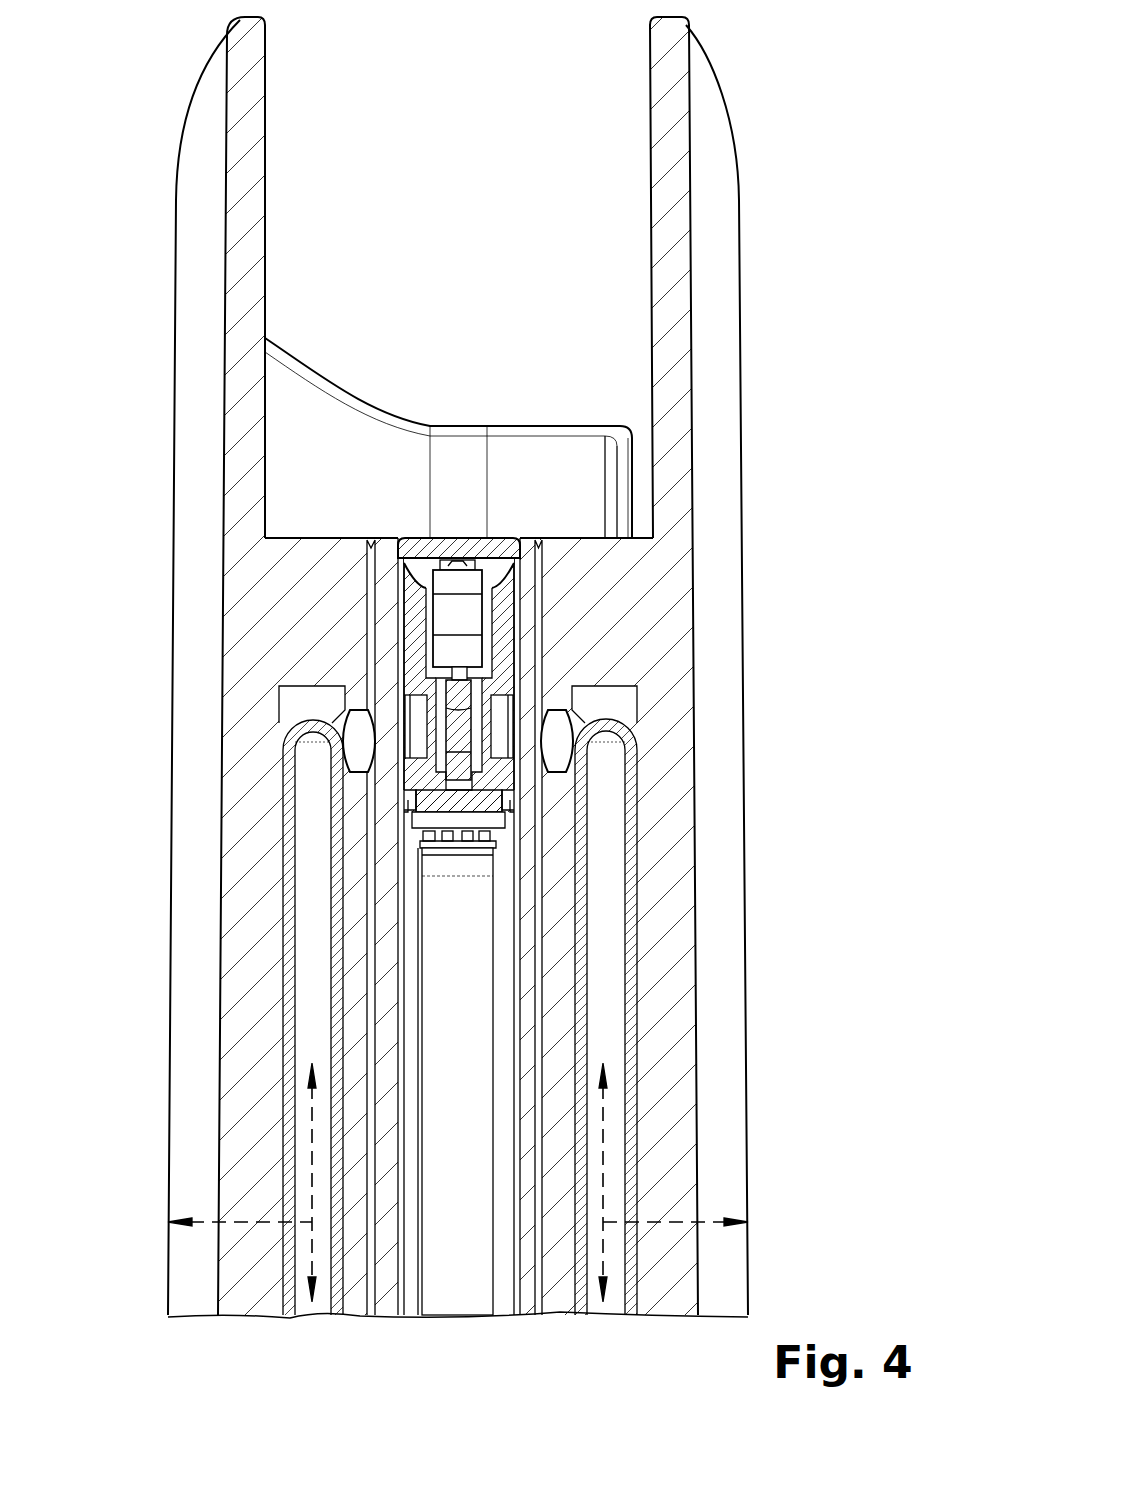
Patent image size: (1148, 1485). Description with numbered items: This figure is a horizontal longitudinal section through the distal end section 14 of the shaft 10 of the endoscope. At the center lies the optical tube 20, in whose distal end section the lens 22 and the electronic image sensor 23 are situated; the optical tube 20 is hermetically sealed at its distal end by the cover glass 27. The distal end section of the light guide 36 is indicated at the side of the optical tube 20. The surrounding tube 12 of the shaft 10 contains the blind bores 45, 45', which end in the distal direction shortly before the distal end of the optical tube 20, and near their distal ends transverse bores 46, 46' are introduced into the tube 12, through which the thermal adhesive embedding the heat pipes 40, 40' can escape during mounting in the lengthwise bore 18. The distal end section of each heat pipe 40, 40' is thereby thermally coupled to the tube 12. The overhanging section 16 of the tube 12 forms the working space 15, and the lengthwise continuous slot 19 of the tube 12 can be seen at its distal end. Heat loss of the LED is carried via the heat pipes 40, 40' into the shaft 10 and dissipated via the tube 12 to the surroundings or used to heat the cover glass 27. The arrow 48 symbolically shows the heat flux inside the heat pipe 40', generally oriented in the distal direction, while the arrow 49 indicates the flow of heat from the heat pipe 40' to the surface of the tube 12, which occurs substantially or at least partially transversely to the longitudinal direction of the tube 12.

The shaft 10 is at (781, 1192).
The tube 12 is at (645, 597).
The distal end section 14 is at (800, 522).
The working space 15 is at (474, 173).
The overhanging section 16 is at (200, 262).
The lengthwise bore 18 is at (368, 630).
The lengthwise continuous slot 19 is at (640, 470).
The optical tube 20 is at (512, 892).
The lens 22 is at (458, 627).
The electronic image sensor 23 is at (512, 803).
The cover glass 27 is at (457, 553).
The light guide 36 is at (388, 640).
The heat pipe 40 is at (686, 1017).
The heat pipe 40' is at (233, 1017).
The blind bore 45 is at (685, 700).
The blind bore 45' is at (234, 704).
The transverse bore 46 is at (669, 741).
The transverse bore 46' is at (249, 741).
The arrow 48 is at (312, 1130).
The arrow 49 is at (205, 1215).